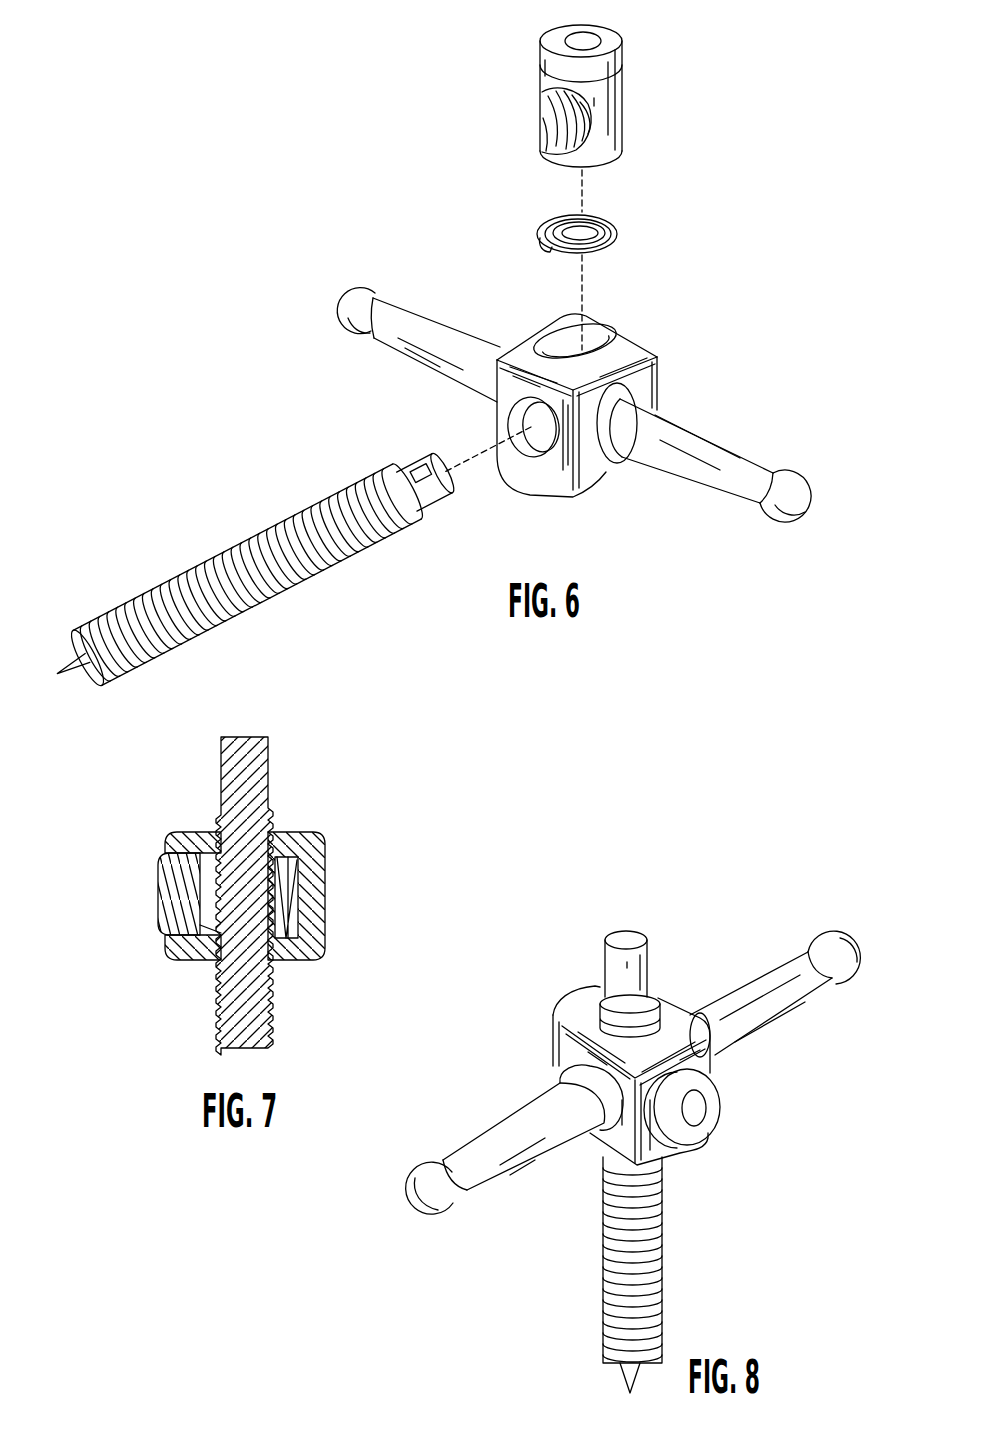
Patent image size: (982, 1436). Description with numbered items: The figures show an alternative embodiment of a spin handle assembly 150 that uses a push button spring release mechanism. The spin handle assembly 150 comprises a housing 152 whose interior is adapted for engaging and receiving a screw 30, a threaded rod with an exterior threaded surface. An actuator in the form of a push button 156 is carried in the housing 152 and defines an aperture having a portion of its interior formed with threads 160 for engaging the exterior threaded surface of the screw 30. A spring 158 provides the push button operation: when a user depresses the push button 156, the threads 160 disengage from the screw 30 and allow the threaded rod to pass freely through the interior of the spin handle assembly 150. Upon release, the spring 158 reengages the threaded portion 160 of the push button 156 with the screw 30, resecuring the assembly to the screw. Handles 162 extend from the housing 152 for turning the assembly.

In FIG. 6, the screw 30 is at (318, 500).
In FIG. 7, the screw 30 is at (275, 808).
In FIG. 8, the screw 30 is at (662, 1204).
In FIG. 6, the spin handle assembly 150 is at (828, 305).
In FIG. 8, the spin handle assembly 150 is at (748, 1078).
In FIG. 6, the housing 152 is at (655, 365).
In FIG. 8, the housing 152 is at (565, 1012).
In FIG. 6, the push button 156 is at (618, 112).
In FIG. 7, the push button 156 is at (158, 875).
In FIG. 8, the push button 156 is at (708, 1125).
In FIG. 6, the spring 158 is at (616, 234).
In FIG. 7, the spring 158 is at (296, 882).
In FIG. 6, the threads 160 is at (553, 128).
In FIG. 6, the handle 162 is at (789, 478).
In FIG. 8, the handle 162 is at (818, 936).